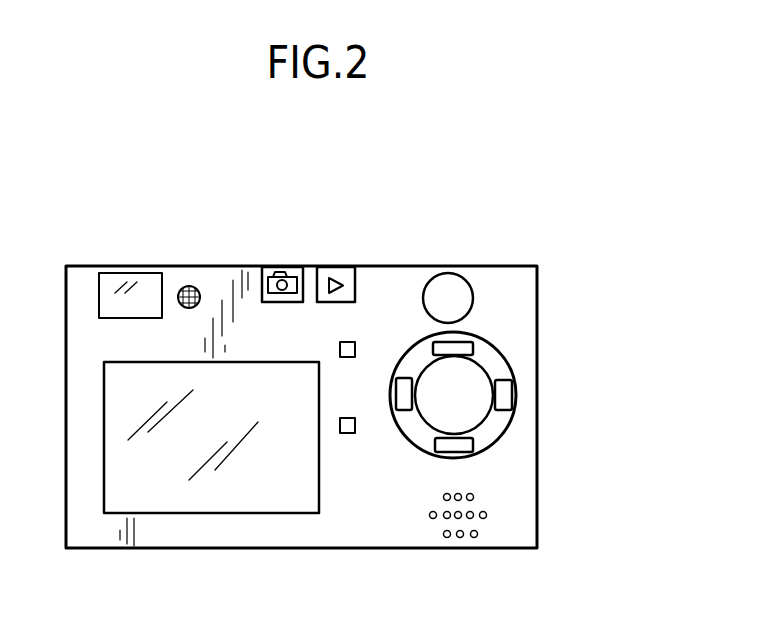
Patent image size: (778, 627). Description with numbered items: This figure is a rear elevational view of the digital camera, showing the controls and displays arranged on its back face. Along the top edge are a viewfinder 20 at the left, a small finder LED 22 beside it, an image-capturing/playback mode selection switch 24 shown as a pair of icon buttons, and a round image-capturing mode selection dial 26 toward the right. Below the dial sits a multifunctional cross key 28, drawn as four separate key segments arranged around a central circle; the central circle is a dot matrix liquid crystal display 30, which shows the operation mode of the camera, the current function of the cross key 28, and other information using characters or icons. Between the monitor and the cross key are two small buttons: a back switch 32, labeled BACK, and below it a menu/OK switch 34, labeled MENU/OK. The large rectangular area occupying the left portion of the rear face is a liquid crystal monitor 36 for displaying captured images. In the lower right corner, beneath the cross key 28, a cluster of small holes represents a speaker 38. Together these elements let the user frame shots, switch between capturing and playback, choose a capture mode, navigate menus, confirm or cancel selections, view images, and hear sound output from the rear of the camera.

The viewfinder 20 is at (144, 278).
The finder LED 22 is at (202, 290).
The image-capturing/playback mode selection switch 24 is at (287, 267).
The image-capturing mode selection dial 26 is at (455, 285).
The multifunctional cross key 28 is at (413, 393).
The dot matrix liquid crystal display 30 is at (442, 420).
The back switch 32 is at (340, 353).
The menu/OK switch 34 is at (340, 430).
The liquid crystal monitor 36 is at (162, 495).
The speaker 38 is at (487, 507).